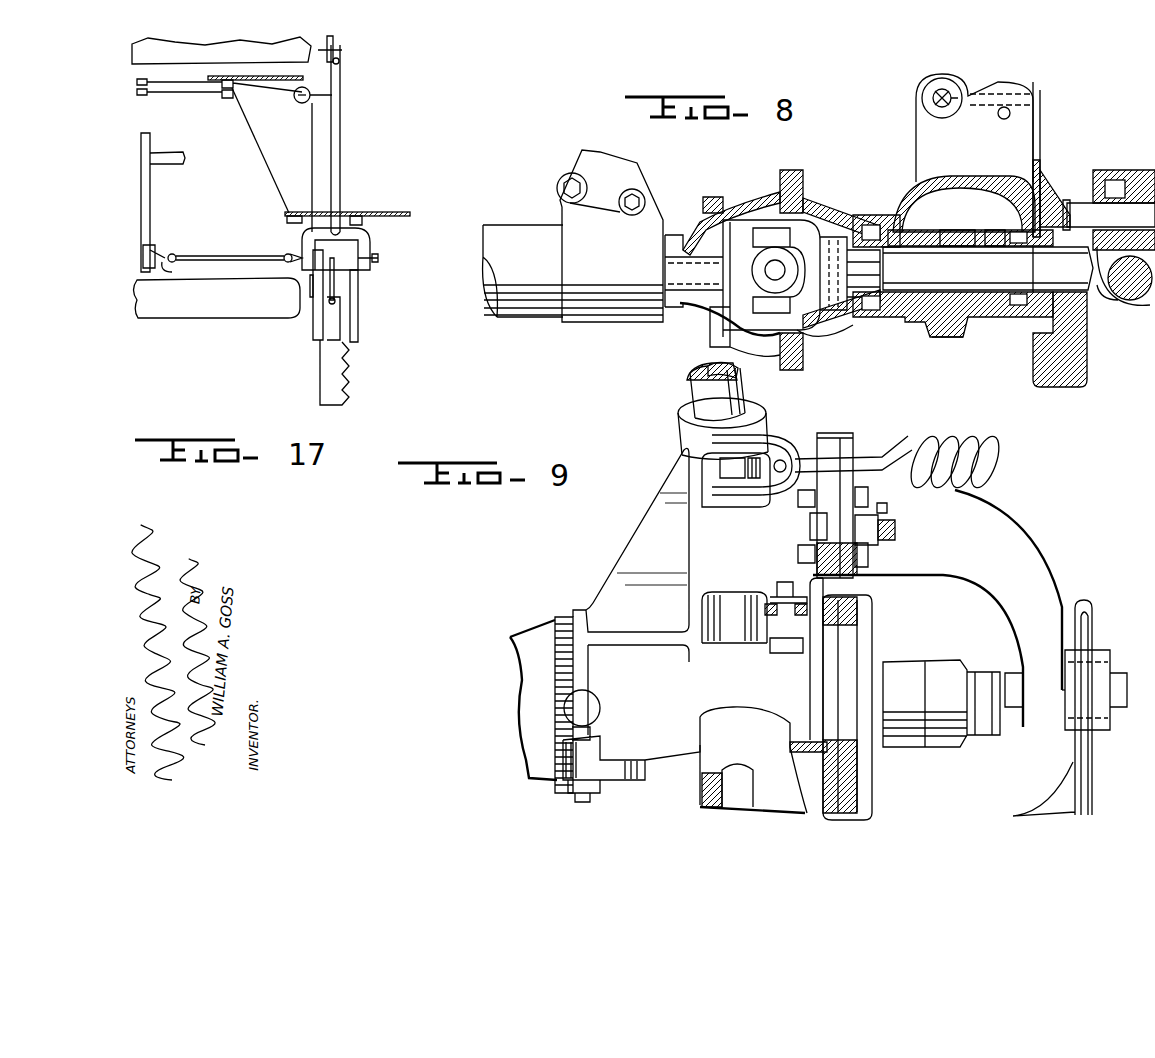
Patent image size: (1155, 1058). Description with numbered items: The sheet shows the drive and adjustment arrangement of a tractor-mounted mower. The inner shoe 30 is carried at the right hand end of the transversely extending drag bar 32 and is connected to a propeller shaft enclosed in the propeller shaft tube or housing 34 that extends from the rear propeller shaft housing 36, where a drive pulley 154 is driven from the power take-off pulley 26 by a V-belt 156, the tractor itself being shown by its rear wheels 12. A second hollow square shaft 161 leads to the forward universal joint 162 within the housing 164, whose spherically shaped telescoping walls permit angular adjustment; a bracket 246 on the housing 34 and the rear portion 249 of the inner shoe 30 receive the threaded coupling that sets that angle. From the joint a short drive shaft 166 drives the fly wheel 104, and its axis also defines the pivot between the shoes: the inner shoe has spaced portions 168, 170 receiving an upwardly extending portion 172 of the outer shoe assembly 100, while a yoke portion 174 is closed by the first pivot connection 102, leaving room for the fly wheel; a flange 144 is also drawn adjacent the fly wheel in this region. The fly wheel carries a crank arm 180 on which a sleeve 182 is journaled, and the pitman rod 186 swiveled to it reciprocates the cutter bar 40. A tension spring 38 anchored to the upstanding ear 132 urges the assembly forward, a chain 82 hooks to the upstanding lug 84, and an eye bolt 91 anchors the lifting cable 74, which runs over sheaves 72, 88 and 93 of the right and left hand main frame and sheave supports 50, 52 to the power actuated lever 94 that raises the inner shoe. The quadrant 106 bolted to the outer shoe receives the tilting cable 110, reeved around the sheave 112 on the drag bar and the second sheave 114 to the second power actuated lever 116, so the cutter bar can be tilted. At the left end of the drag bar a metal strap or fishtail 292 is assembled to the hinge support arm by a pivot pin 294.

In FIG. 17, the rear wheels 12 is at (216, 305).
In FIG. 17, the pulley 26 is at (151, 179).
In FIG. 17, the inner shoe 30 is at (372, 248).
In FIG. 8, the inner shoe 30 is at (1046, 145).
In FIG. 9, the inner shoe 30 is at (1075, 593).
In FIG. 17, the drag bar 32 is at (342, 152).
In FIG. 9, the drag bar 32 is at (697, 389).
In FIG. 17, the propeller shaft tube or housing 34 is at (239, 256).
In FIG. 8, the propeller shaft tube or housing 34 is at (532, 306).
In FIG. 17, the rear propeller shaft housing 36 is at (183, 268).
In FIG. 9, the tension spring 38 is at (960, 440).
In FIG. 17, the cutter bar 40 is at (320, 392).
In FIG. 17, the right hand main frame and sheave support 50 is at (392, 211).
In FIG. 17, the left hand main frame and sheave support 52 is at (292, 78).
In FIG. 17, the sheave 72 is at (295, 224).
In FIG. 17, the lifting cable 74 is at (265, 170).
In FIG. 9, the lifting cable 74 is at (888, 542).
In FIG. 9, the chain 82 is at (795, 612).
In FIG. 9, the upstanding lug 84 is at (732, 605).
In FIG. 17, the sheave 88 is at (362, 222).
In FIG. 9, the eye bolt 91 is at (895, 530).
In FIG. 17, the sheave 93 is at (225, 94).
In FIG. 17, the power actuated lever 94 is at (142, 95).
In FIG. 17, the outer shoe assembly 100 is at (360, 328).
In FIG. 8, the outer shoe assembly 100 is at (948, 334).
In FIG. 9, the outer shoe assembly 100 is at (1128, 693).
In FIG. 17, the first pivot connection 102 is at (379, 260).
In FIG. 8, the fly wheel 104 is at (1078, 366).
In FIG. 9, the fly wheel 104 is at (868, 652).
In FIG. 17, the quadrant 106 is at (300, 300).
In FIG. 9, the quadrant 106 is at (700, 786).
In FIG. 17, the tilting cable 110 is at (311, 147).
In FIG. 17, the sheave 112 is at (300, 103).
In FIG. 17, the second sheave 114 is at (234, 86).
In FIG. 17, the second power actuated lever 116 is at (179, 73).
In FIG. 8, the upstanding ear 132 is at (1038, 100).
In FIG. 9, the upstanding ear 132 is at (718, 466).
In FIG. 8, the flange 144 is at (1088, 320).
In FIG. 9, the flange 144 is at (822, 758).
In FIG. 17, the drive pulley 154 is at (155, 247).
In FIG. 17, the V-belt 156 is at (151, 208).
In FIG. 8, the second hollow square shaft 161 is at (700, 296).
In FIG. 8, the forward universal joint 162 is at (816, 224).
In FIG. 8, the universal joint housing 164 is at (752, 192).
In FIG. 9, the universal joint housing 164 is at (530, 632).
In FIG. 8, the short drive shaft 166 is at (988, 268).
In FIG. 8, the spaced portion 168 is at (905, 218).
In FIG. 8, the spaced portion 170 is at (1000, 230).
In FIG. 8, the upwardly extending portion 172 is at (950, 230).
In FIG. 9, the yoke portion 174 is at (1032, 560).
In FIG. 8, the crank arm 180 is at (1109, 215).
In FIG. 8, the sleeve 182 is at (1130, 172).
In FIG. 9, the sleeve 182 is at (945, 668).
In FIG. 17, the pitman rod 186 is at (338, 268).
In FIG. 8, the bracket 246 is at (562, 166).
In FIG. 8, the rear portion of the inner shoe 249 is at (862, 327).
In FIG. 9, the rear portion of the inner shoe 249 is at (603, 750).
In FIG. 17, the metal strap or fishtail 292 is at (340, 62).
In FIG. 17, the pivot pin 294 is at (342, 50).